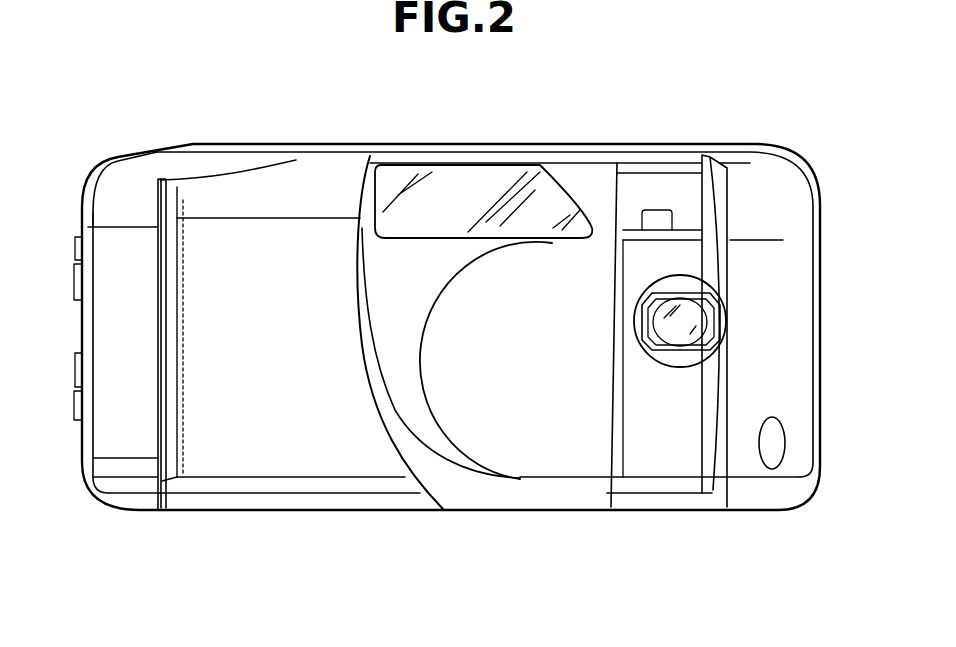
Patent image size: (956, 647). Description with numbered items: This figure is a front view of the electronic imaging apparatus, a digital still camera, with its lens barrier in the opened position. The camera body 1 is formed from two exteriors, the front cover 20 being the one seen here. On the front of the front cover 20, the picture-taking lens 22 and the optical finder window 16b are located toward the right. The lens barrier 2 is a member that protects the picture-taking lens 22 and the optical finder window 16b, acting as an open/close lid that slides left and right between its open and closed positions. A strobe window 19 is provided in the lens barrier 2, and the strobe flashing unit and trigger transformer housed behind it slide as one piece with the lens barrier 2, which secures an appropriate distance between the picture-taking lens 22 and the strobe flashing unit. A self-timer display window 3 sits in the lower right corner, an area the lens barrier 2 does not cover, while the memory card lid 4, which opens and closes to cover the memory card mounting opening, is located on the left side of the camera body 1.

The body 1 is at (146, 140).
The lens barrier 2 is at (578, 172).
The self-timer display window 3 is at (767, 470).
The memory card lid 4 is at (127, 445).
The optical finder window 16b is at (660, 210).
The strobe window 19 is at (458, 178).
The front cover 20 is at (117, 205).
The picture-taking lens 22 is at (683, 337).